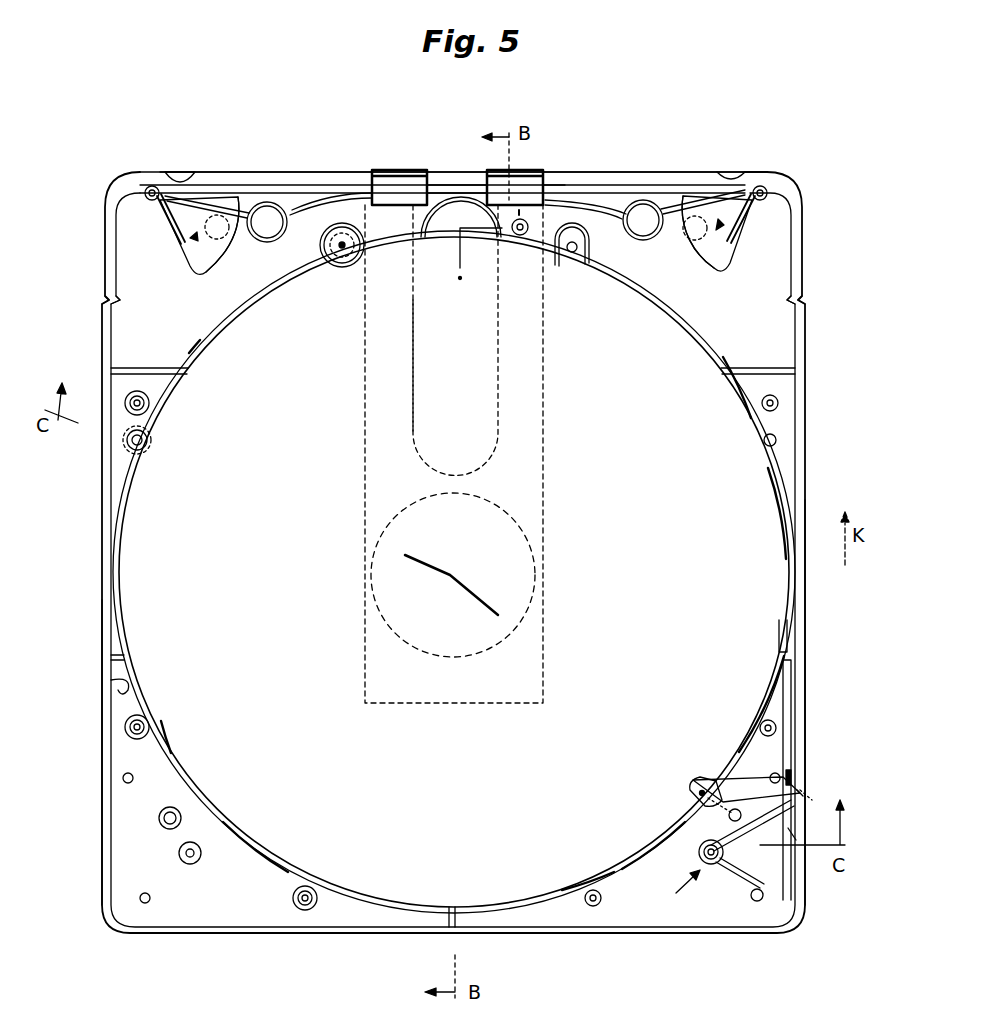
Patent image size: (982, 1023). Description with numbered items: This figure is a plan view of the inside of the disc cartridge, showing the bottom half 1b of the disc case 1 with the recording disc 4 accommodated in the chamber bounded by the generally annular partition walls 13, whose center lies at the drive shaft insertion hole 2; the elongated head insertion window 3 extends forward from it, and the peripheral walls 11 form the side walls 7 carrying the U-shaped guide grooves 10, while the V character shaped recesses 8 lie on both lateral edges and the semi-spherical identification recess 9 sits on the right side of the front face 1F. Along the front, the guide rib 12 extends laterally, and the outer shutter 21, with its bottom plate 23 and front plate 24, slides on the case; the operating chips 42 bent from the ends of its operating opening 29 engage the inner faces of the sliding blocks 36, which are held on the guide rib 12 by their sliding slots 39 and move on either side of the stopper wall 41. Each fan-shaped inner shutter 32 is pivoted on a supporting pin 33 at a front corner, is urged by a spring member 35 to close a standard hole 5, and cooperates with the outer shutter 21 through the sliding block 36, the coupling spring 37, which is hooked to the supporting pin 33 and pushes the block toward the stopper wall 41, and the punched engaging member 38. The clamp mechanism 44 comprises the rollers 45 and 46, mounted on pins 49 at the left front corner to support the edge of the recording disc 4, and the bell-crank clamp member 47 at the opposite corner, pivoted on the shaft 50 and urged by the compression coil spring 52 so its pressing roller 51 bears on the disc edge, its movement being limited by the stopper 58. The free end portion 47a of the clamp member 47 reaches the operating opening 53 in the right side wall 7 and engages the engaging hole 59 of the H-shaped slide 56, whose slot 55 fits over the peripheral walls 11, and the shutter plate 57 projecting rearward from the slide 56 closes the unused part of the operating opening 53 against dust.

The disc case 1 is at (104, 232).
The bottom half 1b is at (116, 270).
The front face 1F is at (590, 172).
The drive shaft insertion hole 2 is at (388, 628).
The head insertion window 3 is at (416, 452).
The recording disc 4 is at (186, 770).
The standard hole 5 is at (228, 248).
The side wall 7 is at (798, 637).
The V character shaped recess 8 is at (110, 320).
The identification recess 9 is at (731, 180).
The guide groove 10 is at (795, 577).
The peripheral wall 11 is at (112, 682).
The guide rib 12 is at (622, 185).
The partition wall 13 is at (196, 352).
The outer shutter 21 is at (372, 178).
The bottom plate 23 is at (367, 362).
The front plate 24 is at (548, 172).
The operating opening 29 is at (452, 170).
The inner shutter 32 is at (214, 262).
The supporting pin 33 is at (152, 205).
The spring member 35 is at (172, 235).
The sliding block 36 is at (397, 170).
The coupling spring 37 is at (273, 242).
The engaging member 38 is at (212, 237).
The sliding slot 39 is at (452, 204).
The stopper wall 41 is at (461, 200).
The operating chip 42 is at (427, 172).
The clamp mechanism 44 is at (672, 887).
The roller 45 is at (148, 450).
The roller 46 is at (342, 268).
The clamp member 47 is at (750, 800).
The free end portion 47a is at (803, 796).
The pin 49 is at (346, 249).
The shaft 50 is at (729, 818).
The pressing roller 51 is at (700, 779).
The coil spring 52 is at (712, 866).
The operating opening 53 is at (796, 832).
The slot 55 is at (795, 672).
The slide 56 is at (800, 718).
The shutter plate 57 is at (772, 850).
The stopper 58 is at (772, 774).
The engaging hole 59 is at (822, 792).